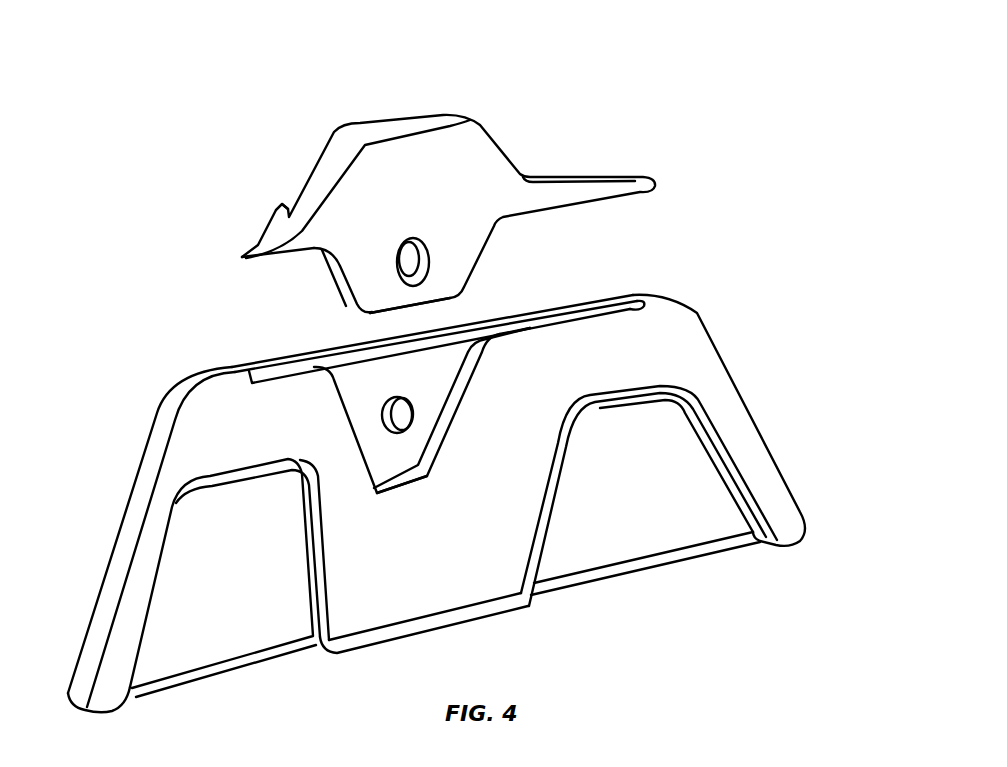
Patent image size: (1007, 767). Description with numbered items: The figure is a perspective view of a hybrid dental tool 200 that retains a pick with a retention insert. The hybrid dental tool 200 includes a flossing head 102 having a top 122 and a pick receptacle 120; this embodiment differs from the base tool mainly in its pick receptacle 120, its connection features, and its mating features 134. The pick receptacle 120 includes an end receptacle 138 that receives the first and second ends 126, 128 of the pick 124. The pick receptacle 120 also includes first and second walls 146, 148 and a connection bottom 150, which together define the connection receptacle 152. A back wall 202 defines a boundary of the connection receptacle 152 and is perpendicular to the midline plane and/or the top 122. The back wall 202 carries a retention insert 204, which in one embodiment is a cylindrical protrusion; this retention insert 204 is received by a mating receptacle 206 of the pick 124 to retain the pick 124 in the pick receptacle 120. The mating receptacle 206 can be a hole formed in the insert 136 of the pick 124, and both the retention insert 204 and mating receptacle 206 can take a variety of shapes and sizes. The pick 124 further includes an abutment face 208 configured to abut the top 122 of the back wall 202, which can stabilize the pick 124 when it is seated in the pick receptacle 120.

The hybrid dental tool 200 is at (463, 385).
The flossing head 102 is at (155, 418).
The pick receptacle 120 is at (436, 469).
The top 122 is at (652, 294).
The pick 124 is at (451, 202).
The first end 126 is at (241, 258).
The second end 128 is at (655, 180).
The mating features 134 is at (427, 314).
The insert 136 is at (330, 272).
The end receptacle 138 is at (607, 320).
The first wall 146 is at (360, 460).
The second wall 148 is at (480, 368).
The connection bottom 150 is at (400, 490).
The connection receptacle 152 is at (369, 360).
The back wall 202 is at (447, 353).
The retention insert 204 is at (413, 415).
The mating receptacle 206 is at (422, 244).
The abutment face 208 is at (278, 210).